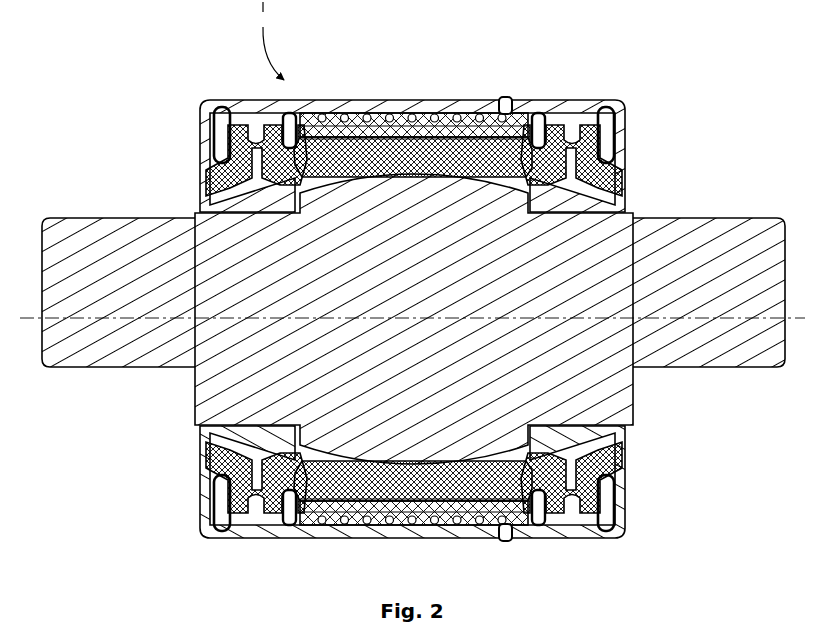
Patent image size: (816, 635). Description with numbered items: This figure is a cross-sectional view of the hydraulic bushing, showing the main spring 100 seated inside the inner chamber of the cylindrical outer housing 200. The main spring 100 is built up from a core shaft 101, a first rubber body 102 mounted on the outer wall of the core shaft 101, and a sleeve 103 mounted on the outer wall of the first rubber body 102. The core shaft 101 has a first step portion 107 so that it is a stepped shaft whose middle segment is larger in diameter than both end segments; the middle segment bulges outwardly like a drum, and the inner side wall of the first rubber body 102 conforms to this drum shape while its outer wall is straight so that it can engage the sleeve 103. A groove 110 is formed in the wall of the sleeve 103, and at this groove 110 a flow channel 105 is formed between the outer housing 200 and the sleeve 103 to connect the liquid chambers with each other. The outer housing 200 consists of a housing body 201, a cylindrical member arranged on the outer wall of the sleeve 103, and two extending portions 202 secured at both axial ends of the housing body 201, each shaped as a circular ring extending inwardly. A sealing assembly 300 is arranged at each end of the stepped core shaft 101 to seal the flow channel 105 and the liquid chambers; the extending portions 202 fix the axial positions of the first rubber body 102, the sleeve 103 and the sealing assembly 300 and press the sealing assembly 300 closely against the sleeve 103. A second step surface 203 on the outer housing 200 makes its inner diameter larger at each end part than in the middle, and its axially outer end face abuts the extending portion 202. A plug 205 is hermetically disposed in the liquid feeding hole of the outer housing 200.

The main spring 100 is at (401, 148).
The core shaft 101 is at (447, 205).
The first rubber body 102 is at (484, 137).
The sleeve 103 is at (430, 114).
The flow channel 105 is at (343, 128).
The first step portion 107 is at (553, 128).
The groove 110 is at (437, 117).
The outer housing 200 is at (306, 98).
The housing body 201 is at (584, 128).
The extending portion 202 is at (628, 111).
The second step surface 203 is at (222, 108).
The plug 205 is at (508, 97).
The sealing assembly 300 is at (252, 165).